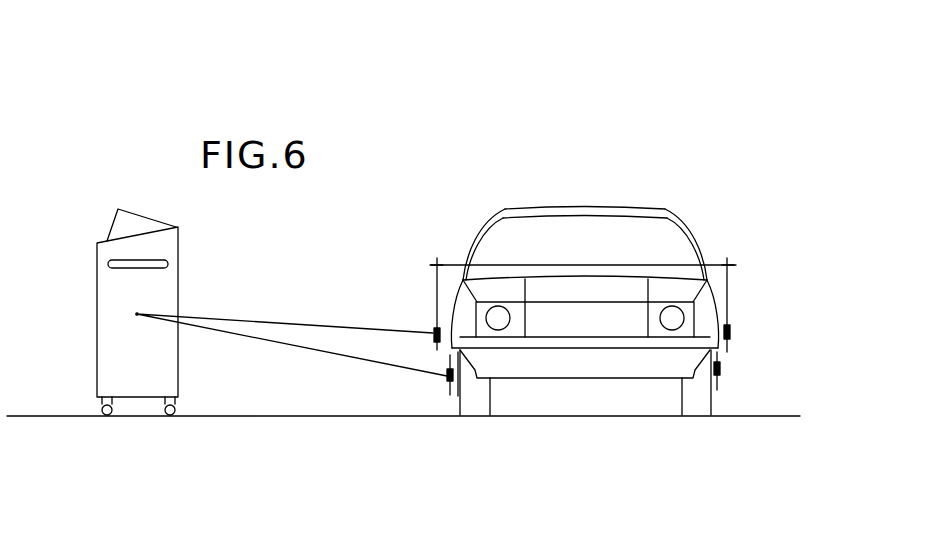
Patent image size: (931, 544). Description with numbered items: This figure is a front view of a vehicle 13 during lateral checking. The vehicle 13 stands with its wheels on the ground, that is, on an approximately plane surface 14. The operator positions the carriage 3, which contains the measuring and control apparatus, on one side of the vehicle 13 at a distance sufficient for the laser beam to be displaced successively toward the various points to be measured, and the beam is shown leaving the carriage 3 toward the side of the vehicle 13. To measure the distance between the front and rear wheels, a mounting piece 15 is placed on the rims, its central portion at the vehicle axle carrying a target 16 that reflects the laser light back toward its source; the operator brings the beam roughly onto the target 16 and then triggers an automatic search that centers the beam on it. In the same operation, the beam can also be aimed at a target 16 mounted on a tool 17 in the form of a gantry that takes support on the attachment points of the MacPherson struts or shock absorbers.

The carriage 3 is at (102, 365).
The vehicle 13 is at (530, 209).
The plane surface 14 is at (775, 413).
The mounting piece 15 is at (447, 398).
The target 16 is at (434, 333).
The tool 17 is at (708, 262).